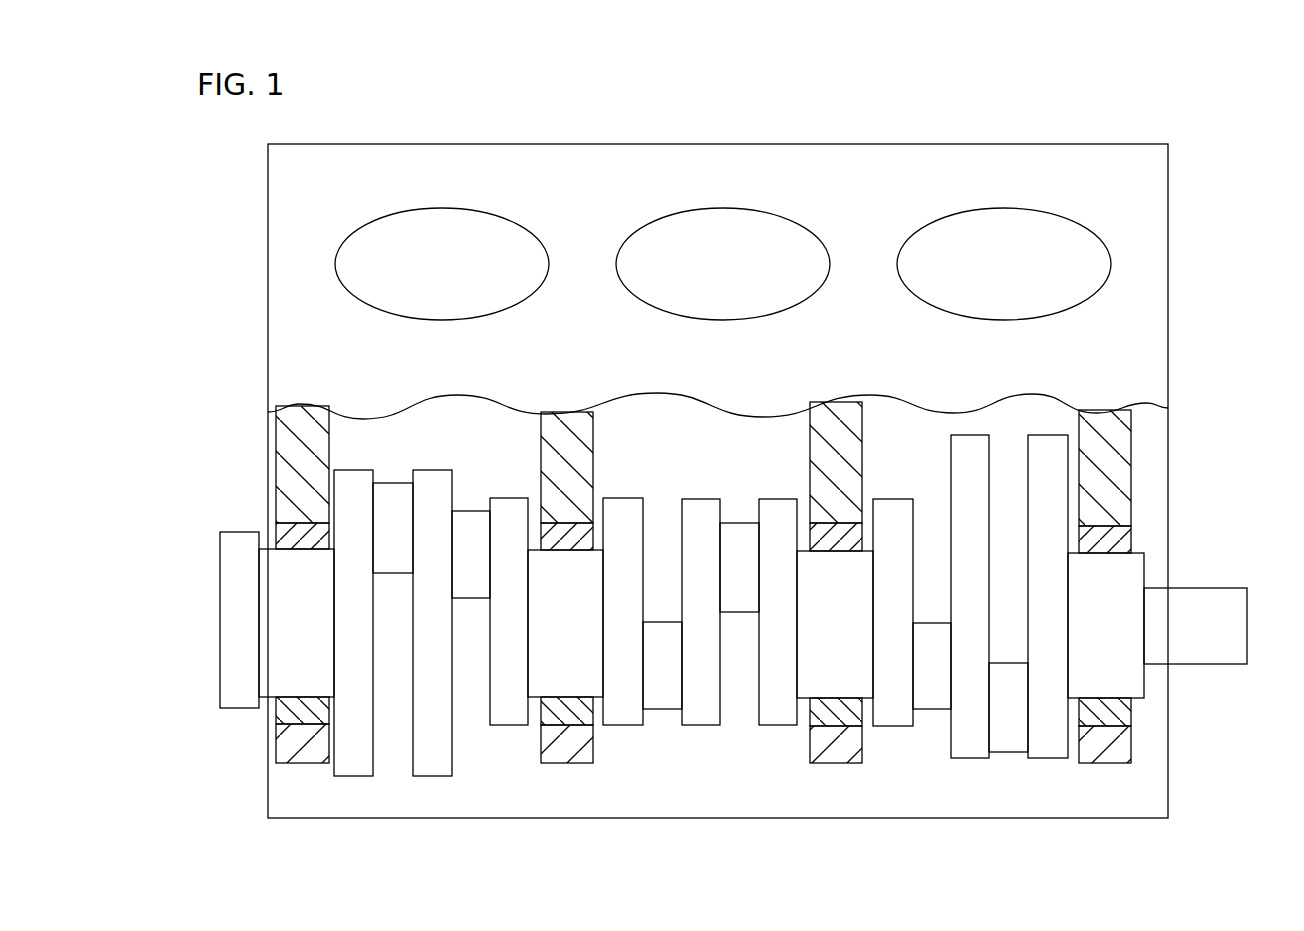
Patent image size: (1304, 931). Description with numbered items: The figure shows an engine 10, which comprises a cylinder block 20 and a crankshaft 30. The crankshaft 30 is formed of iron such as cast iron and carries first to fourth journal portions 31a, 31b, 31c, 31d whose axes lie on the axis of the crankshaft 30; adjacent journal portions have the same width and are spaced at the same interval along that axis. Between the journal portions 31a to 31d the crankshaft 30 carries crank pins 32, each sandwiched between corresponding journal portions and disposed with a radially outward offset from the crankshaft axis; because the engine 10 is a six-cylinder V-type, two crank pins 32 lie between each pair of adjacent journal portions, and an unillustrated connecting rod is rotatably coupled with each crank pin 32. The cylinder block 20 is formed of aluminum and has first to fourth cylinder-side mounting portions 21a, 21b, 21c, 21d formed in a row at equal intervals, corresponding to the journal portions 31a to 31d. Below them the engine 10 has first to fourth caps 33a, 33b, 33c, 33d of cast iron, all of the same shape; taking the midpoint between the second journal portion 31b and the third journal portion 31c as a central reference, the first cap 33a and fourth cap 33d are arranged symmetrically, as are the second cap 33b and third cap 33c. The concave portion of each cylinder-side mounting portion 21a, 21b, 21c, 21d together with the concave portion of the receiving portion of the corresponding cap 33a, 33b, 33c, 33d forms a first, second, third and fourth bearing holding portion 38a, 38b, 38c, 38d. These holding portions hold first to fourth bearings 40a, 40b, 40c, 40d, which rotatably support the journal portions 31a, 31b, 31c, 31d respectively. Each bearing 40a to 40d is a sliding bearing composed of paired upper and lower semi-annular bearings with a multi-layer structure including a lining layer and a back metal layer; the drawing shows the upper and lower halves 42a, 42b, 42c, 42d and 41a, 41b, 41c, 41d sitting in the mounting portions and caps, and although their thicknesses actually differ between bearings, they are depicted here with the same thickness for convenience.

The engine 10 is at (1158, 117).
The cylinder block 20 is at (1169, 319).
The first cylinder-side mounting portion 21a is at (288, 458).
The second cylinder-side mounting portion 21b is at (580, 445).
The third cylinder-side mounting portion 21c is at (857, 432).
The fourth cylinder-side mounting portion 21d is at (1123, 442).
The crankshaft 30 is at (1235, 583).
The first journal portion 31a is at (272, 665).
The second journal portion 31b is at (540, 675).
The third journal portion 31c is at (812, 668).
The fourth journal portion 31d is at (1130, 680).
The crank pin 32 is at (475, 522).
The first cap 33a is at (302, 752).
The second cap 33b is at (568, 760).
The third cap 33c is at (830, 755).
The fourth cap 33d is at (1115, 745).
The first bearing holding portion 38a is at (339, 766).
The second bearing holding portion 38b is at (600, 769).
The third bearing holding portion 38c is at (853, 770).
The fourth bearing holding portion 38d is at (1162, 767).
The first bearing 40a is at (302, 604).
The second bearing 40b is at (577, 628).
The third bearing 40c is at (832, 626).
The fourth bearing 40d is at (1138, 644).
The lower thrust bearing half 41a is at (280, 715).
The lower thrust bearing half 41b is at (542, 720).
The lower thrust bearing half 41c is at (815, 718).
The lower thrust bearing half 41d is at (1078, 725).
The upper thrust bearing half 42a is at (280, 533).
The upper thrust bearing half 42b is at (557, 530).
The upper thrust bearing half 42c is at (816, 533).
The upper thrust bearing half 42d is at (1127, 543).